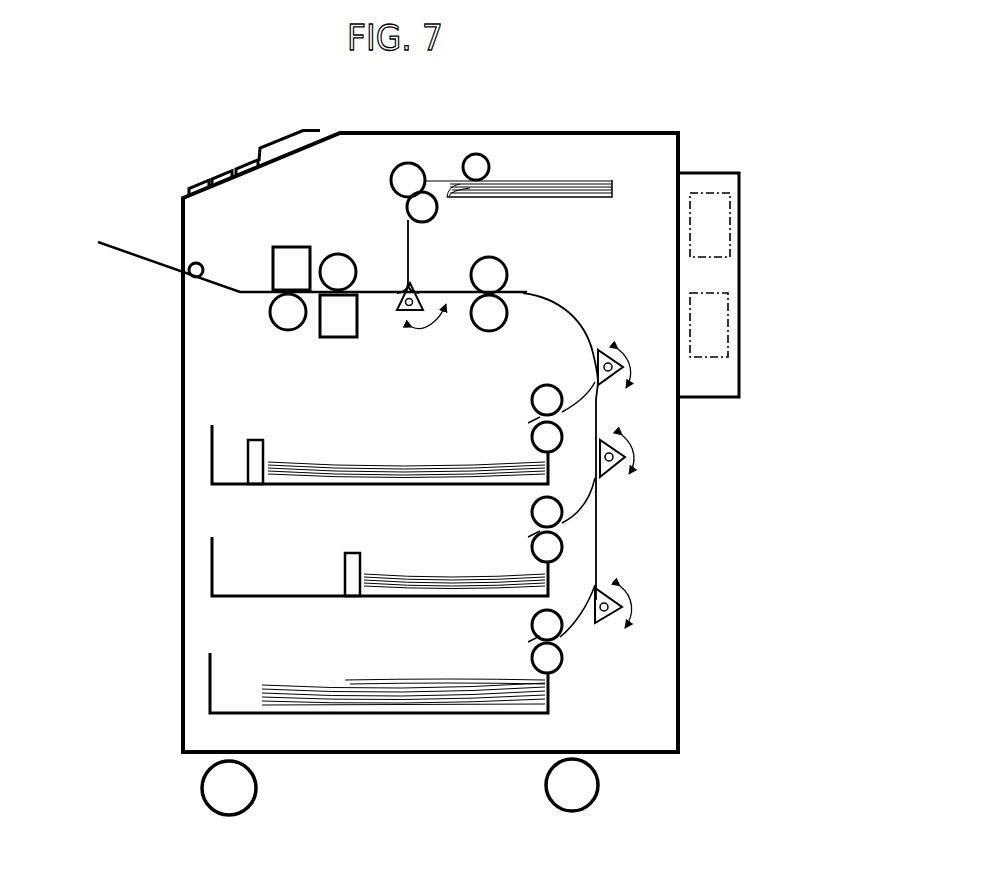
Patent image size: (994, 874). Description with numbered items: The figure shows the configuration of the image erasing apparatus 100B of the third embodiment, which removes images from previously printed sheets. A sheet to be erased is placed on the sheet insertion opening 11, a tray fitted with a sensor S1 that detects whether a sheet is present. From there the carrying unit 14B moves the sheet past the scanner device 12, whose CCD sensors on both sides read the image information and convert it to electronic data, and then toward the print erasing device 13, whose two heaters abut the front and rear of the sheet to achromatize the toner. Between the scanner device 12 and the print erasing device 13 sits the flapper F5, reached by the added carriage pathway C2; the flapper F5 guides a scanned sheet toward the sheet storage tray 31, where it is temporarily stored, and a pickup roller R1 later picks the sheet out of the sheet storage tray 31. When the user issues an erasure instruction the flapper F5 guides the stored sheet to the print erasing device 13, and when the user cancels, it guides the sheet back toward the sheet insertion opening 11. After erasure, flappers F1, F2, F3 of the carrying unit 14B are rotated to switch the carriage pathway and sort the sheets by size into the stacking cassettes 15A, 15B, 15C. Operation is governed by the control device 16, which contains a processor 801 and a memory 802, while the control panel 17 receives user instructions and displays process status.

The image erasing apparatus 100B is at (578, 95).
The control panel 17 is at (250, 156).
The sheet insertion opening 11 is at (137, 257).
The sensor S1 is at (191, 278).
The scanner device 12 is at (322, 354).
The carriage pathway C2 is at (402, 252).
The flapper F5 is at (404, 313).
The pickup roller R1 is at (477, 154).
The sheet storage tray 31 is at (560, 200).
The print erasing device 13 is at (472, 341).
The carrying unit 14B is at (573, 322).
The control device 16 is at (727, 172).
The processor 801 is at (730, 218).
The memory 802 is at (728, 313).
The flapper F1 is at (598, 337).
The flapper F2 is at (612, 480).
The flapper F3 is at (600, 624).
The stacking cassette 15A is at (208, 690).
The stacking cassette 15B is at (212, 563).
The stacking cassette 15C is at (212, 450).